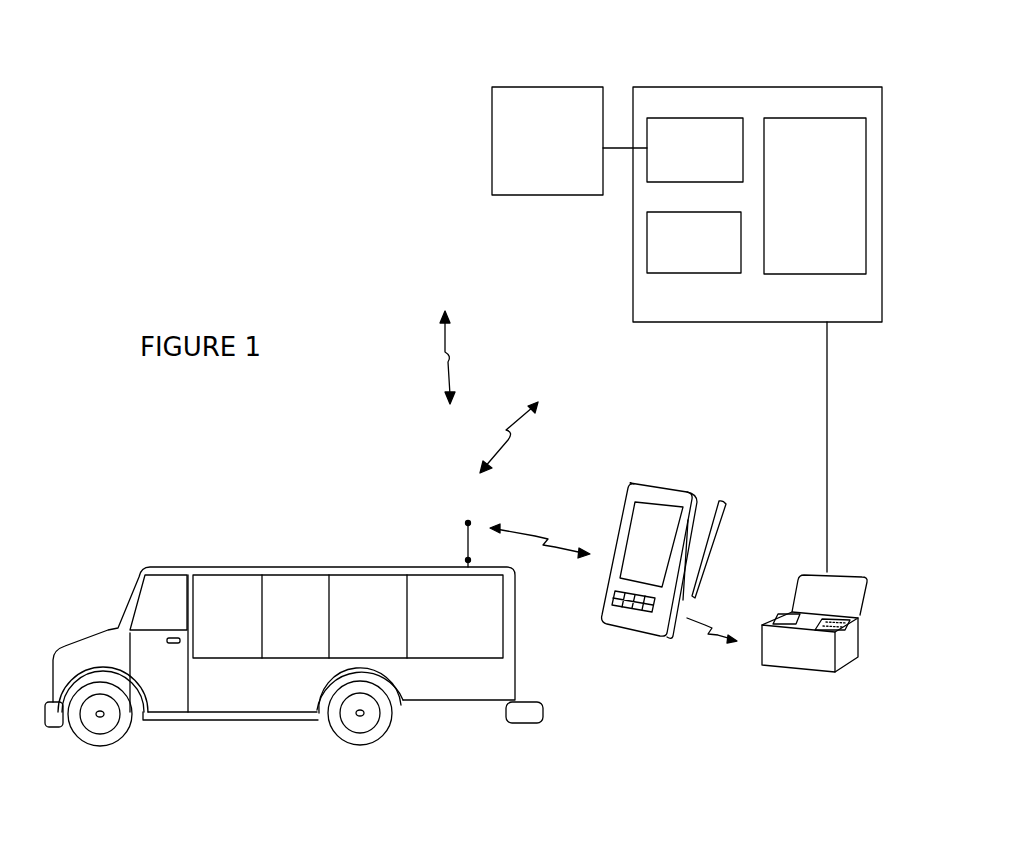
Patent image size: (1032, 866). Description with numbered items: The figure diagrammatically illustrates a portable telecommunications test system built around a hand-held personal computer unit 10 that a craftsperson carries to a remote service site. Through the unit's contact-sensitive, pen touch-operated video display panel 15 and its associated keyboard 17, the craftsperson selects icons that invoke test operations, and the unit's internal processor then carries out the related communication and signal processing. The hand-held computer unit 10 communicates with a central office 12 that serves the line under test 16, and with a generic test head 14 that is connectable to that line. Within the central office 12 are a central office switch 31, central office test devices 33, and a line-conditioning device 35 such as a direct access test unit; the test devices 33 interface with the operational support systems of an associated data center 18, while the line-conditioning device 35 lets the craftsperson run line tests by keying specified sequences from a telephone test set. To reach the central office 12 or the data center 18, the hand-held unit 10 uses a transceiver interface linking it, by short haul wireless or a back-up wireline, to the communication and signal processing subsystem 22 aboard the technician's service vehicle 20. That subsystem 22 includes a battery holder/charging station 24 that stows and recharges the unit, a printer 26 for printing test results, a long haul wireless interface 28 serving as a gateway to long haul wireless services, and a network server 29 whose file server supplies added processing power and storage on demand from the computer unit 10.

The hand-held personal computer unit 10 is at (687, 565).
The central office 12 is at (795, 86).
The generic test head 14 is at (840, 673).
The contact-sensitive video display panel 15 is at (662, 510).
The line under test 16 is at (827, 424).
The keyboard 17 is at (645, 612).
The data center 18 is at (515, 94).
The service vehicle 20 is at (107, 630).
The communication and signal processing subsystem 22 is at (225, 574).
The battery holder/charging station 24 is at (214, 652).
The printer 26 is at (278, 652).
The long haul wireless interface 28 is at (355, 583).
The network server 29 is at (445, 650).
The central office switch 31 is at (856, 236).
The central office test devices 33 is at (669, 127).
The line-conditioning device 35 is at (693, 274).